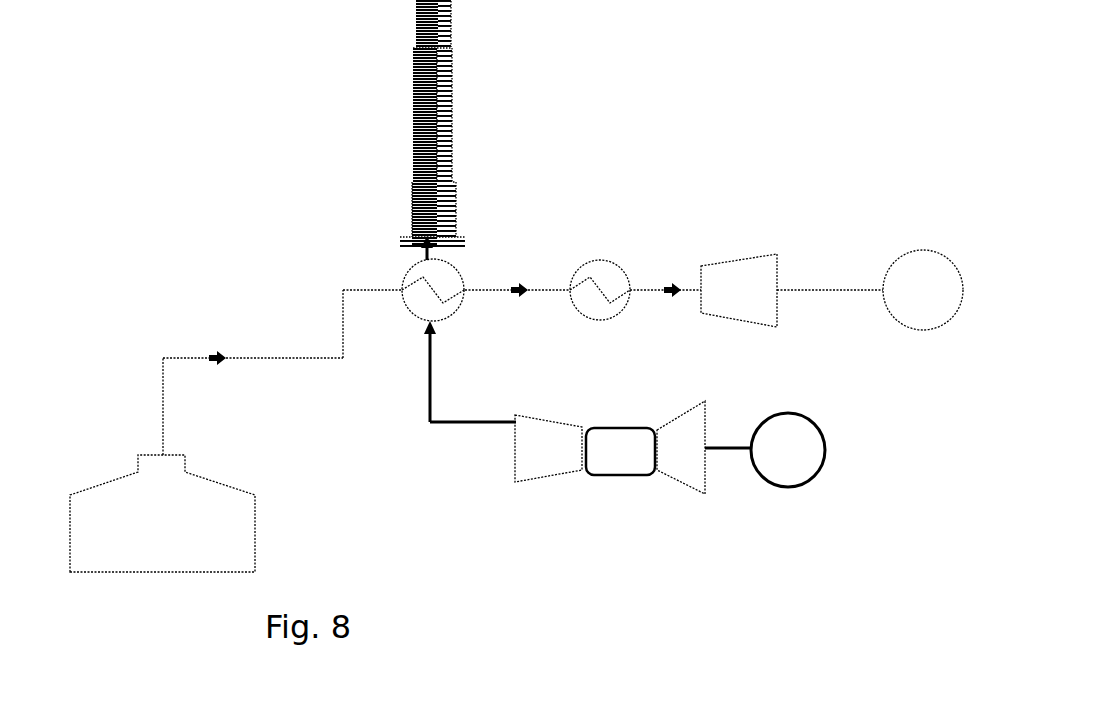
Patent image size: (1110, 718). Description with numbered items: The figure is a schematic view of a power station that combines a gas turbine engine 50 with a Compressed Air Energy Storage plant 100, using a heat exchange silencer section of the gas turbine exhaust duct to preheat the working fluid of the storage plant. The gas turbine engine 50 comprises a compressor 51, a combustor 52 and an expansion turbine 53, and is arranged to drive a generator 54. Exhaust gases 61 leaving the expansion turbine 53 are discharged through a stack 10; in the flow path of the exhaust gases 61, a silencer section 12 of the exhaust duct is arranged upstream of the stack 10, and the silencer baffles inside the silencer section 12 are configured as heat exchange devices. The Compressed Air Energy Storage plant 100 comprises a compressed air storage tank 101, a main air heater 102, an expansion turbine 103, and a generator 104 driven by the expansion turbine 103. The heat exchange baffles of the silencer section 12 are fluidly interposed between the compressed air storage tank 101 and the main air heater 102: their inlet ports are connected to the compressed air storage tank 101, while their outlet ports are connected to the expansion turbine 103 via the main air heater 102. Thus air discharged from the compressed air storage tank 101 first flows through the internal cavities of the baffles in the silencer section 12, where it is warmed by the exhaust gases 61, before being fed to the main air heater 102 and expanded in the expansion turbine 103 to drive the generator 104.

The stack 10 is at (411, 105).
The silencer section 12 is at (399, 270).
The gas turbine engine 50 is at (548, 491).
The compressor 51 is at (677, 482).
The combustor 52 is at (621, 463).
The expansion turbine 53 is at (540, 482).
The generator 54 is at (822, 470).
The exhaust gases 61 is at (427, 364).
The Compressed Air Energy Storage plant 100 is at (700, 164).
The compressed air storage tank 101 is at (162, 513).
The main air heater 102 is at (599, 261).
The expansion turbine 103 is at (772, 262).
The generator 104 is at (916, 255).